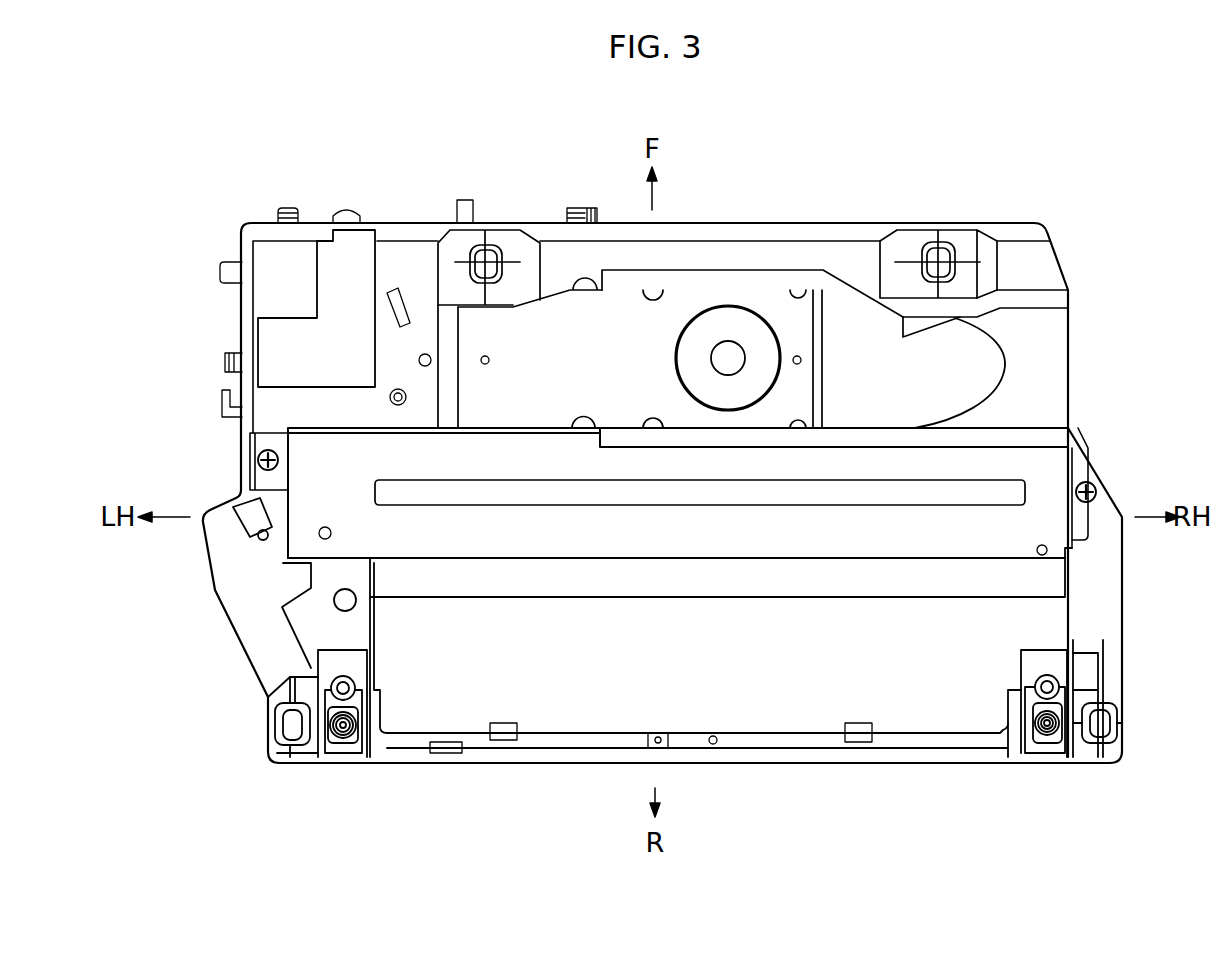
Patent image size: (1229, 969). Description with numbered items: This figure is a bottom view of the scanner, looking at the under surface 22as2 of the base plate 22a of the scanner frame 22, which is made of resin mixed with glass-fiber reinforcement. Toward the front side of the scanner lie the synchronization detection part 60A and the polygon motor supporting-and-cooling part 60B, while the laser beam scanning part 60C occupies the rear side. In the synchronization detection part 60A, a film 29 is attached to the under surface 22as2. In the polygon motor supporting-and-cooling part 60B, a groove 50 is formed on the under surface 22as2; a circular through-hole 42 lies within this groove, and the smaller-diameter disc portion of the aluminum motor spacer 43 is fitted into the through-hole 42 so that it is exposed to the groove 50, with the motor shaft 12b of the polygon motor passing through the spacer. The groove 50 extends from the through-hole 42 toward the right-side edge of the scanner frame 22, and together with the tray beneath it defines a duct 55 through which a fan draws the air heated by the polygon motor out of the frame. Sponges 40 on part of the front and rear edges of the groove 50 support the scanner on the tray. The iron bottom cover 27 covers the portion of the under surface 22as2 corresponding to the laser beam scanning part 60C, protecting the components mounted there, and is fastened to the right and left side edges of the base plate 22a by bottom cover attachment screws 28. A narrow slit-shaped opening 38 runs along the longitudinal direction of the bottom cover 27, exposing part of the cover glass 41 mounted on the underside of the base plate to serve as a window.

The scanner frame 22 is at (1035, 236).
The base plate 22a is at (877, 231).
The under surface 22as2 is at (1094, 584).
The synchronization detection part 60A is at (297, 188).
The polygon motor supporting-and-cooling part 60B is at (695, 210).
The laser beam scanning part 60C is at (801, 771).
The film 29 is at (356, 257).
The groove 50 is at (897, 269).
The duct 55 is at (954, 372).
The motor spacer 43 is at (728, 307).
The circular through-hole 42 is at (753, 306).
The motor shaft 12b is at (712, 355).
The sponges 40 is at (1030, 427).
The opening 38 is at (1018, 478).
The bottom cover attachment screws 28 is at (260, 462).
The cover glass 41 is at (942, 492).
The bottom cover 27 is at (548, 737).